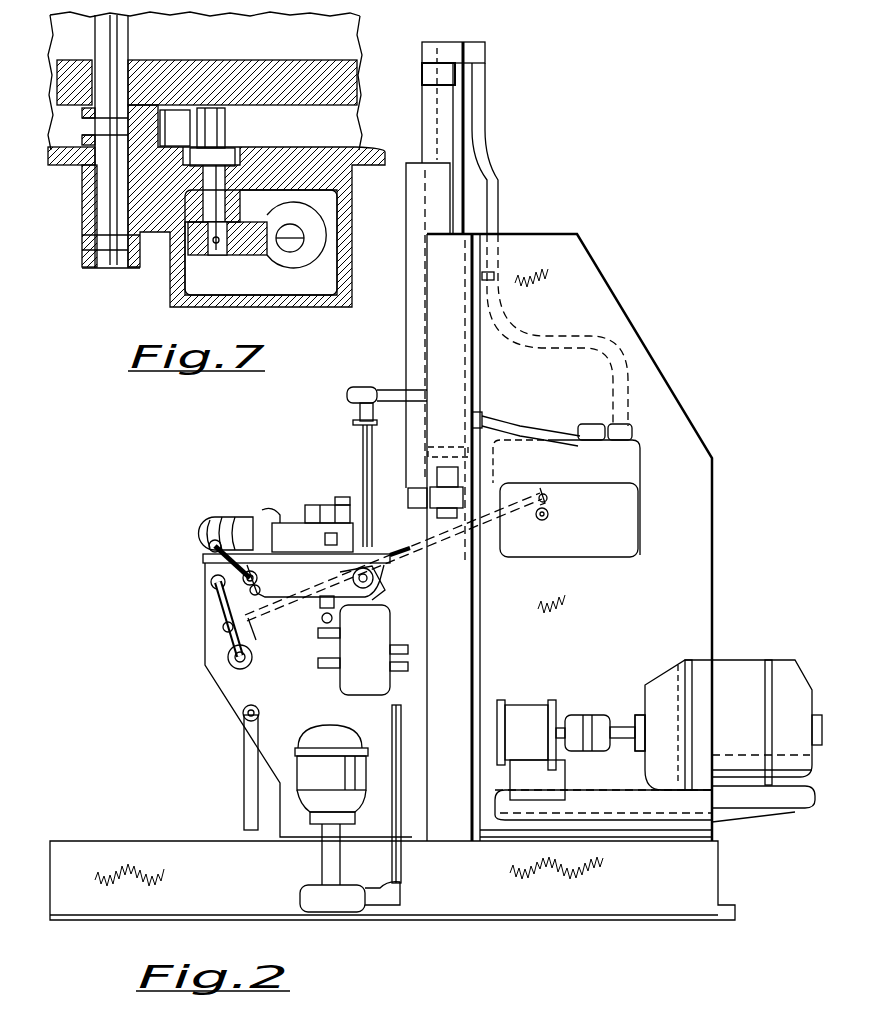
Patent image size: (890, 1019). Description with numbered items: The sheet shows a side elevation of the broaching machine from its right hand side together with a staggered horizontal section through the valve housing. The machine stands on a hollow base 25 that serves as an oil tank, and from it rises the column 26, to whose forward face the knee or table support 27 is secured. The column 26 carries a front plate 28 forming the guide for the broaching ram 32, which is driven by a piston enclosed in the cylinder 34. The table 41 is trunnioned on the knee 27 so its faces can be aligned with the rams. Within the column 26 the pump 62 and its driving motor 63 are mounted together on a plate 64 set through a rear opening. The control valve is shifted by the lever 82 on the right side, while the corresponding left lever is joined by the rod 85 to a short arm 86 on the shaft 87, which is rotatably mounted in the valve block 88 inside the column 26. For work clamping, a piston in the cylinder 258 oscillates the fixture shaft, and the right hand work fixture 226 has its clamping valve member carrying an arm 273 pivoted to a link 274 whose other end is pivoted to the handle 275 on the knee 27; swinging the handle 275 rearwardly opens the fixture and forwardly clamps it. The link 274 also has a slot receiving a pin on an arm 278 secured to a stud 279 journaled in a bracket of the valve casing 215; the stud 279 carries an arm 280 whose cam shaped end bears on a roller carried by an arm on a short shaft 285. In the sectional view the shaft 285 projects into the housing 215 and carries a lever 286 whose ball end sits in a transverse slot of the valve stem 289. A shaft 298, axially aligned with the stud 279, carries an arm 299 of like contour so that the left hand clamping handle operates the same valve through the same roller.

In FIG. 2, the base 25 is at (82, 905).
In FIG. 2, the column 26 is at (712, 548).
In FIG. 2, the knee or table support 27 is at (240, 712).
In FIG. 2, the front plate 28 is at (480, 590).
In FIG. 2, the broaching tool slide or ram 32 is at (406, 202).
In FIG. 2, the cylinder 34 is at (448, 133).
In FIG. 2, the table 41 is at (218, 563).
In FIG. 2, the pump 62 is at (525, 712).
In FIG. 2, the motor 63 is at (736, 670).
In FIG. 2, the plate 64 is at (800, 805).
In FIG. 2, the lever 82 is at (215, 610).
In FIG. 2, the rod 85 is at (410, 560).
In FIG. 2, the short arm 86 is at (548, 498).
In FIG. 2, the shaft 87 is at (548, 510).
In FIG. 2, the valve block 88 is at (637, 463).
In FIG. 7, the valve casing or housing 215 is at (345, 243).
In FIG. 2, the valve casing or housing 215 is at (345, 665).
In FIG. 2, the work fixture 226 is at (295, 523).
In FIG. 2, the cylinder 258 is at (215, 525).
In FIG. 2, the arm 273 is at (392, 594).
In FIG. 2, the link 274 is at (285, 618).
In FIG. 2, the lever or handle 275 is at (258, 580).
In FIG. 7, the arm 278 is at (90, 268).
In FIG. 2, the arm 278 is at (320, 628).
In FIG. 7, the stud 279 is at (97, 205).
In FIG. 7, the arm 280 is at (222, 140).
In FIG. 7, the short shaft or stud 285 is at (214, 252).
In FIG. 7, the lever 286 is at (240, 257).
In FIG. 7, the valve stem 289 is at (297, 268).
In FIG. 7, the shaft 298 is at (108, 43).
In FIG. 7, the arm 299 is at (160, 108).